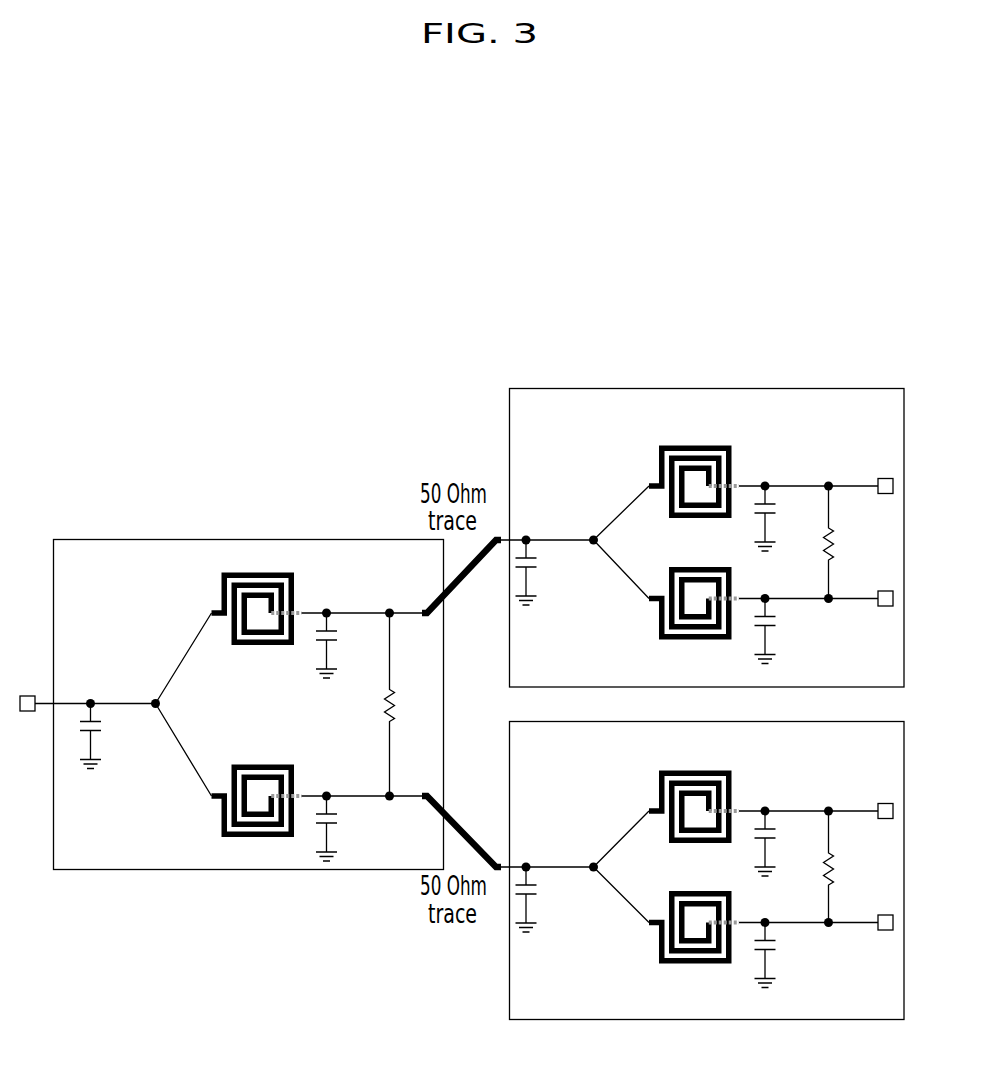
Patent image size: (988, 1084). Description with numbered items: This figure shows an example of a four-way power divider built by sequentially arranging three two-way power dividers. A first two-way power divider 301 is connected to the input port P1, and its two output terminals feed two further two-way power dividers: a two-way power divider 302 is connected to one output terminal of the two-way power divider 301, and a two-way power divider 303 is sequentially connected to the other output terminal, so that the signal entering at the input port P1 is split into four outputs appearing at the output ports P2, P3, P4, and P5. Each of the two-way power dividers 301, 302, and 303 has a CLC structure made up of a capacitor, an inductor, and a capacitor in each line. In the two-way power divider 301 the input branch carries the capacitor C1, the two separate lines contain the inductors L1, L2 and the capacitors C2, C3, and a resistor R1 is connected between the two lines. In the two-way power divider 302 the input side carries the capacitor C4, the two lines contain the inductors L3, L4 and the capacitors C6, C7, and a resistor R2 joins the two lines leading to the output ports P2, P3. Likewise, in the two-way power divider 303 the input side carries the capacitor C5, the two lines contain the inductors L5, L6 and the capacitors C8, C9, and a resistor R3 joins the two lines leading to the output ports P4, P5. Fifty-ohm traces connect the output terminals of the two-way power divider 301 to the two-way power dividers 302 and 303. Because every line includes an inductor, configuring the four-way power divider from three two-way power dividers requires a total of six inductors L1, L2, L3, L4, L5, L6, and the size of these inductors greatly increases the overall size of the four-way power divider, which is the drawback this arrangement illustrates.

The two-way power divider 301 is at (279, 539).
The two-way power divider 302 is at (707, 388).
The two-way power divider 303 is at (707, 1020).
The input port P1 is at (87, 721).
The output port P2 is at (883, 504).
The output port P3 is at (883, 616).
The output port P4 is at (885, 830).
The output port P5 is at (885, 941).
The capacitor C1 is at (107, 734).
The capacitor C2 is at (344, 644).
The capacitor C3 is at (344, 827).
The capacitor C4 is at (543, 571).
The capacitor C5 is at (543, 898).
The capacitor C6 is at (780, 517).
The capacitor C7 is at (780, 629).
The capacitor C8 is at (780, 842).
The capacitor C9 is at (780, 953).
The inductor L1 is at (257, 591).
The inductor L2 is at (257, 819).
The inductor L3 is at (694, 458).
The inductor L4 is at (694, 623).
The inductor L5 is at (694, 787).
The inductor L6 is at (694, 955).
The resistor R1 is at (408, 705).
The resistor R2 is at (845, 543).
The resistor R3 is at (846, 867).